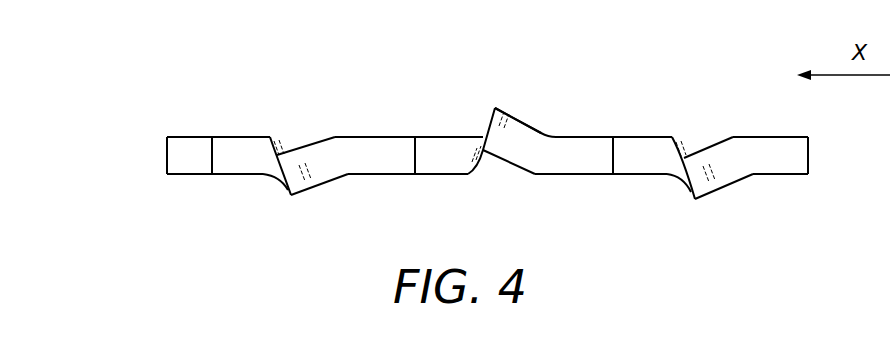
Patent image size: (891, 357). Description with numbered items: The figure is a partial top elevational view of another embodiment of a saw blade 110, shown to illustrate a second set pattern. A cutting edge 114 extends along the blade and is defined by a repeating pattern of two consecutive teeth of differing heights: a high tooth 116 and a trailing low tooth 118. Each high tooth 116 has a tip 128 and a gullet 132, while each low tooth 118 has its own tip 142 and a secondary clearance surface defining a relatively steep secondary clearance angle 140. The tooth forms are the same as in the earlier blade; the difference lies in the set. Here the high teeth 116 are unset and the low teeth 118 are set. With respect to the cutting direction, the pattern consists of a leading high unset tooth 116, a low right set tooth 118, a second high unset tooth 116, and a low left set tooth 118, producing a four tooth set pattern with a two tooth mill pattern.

The saw blade 110 is at (239, 71).
The cutting edge 114 is at (558, 96).
The high tooth 116 is at (243, 168).
The low tooth 118 is at (307, 187).
The tip 128 is at (492, 112).
The gullet 132 is at (377, 168).
The secondary clearance angle 140 is at (449, 145).
The tip 142 is at (414, 143).